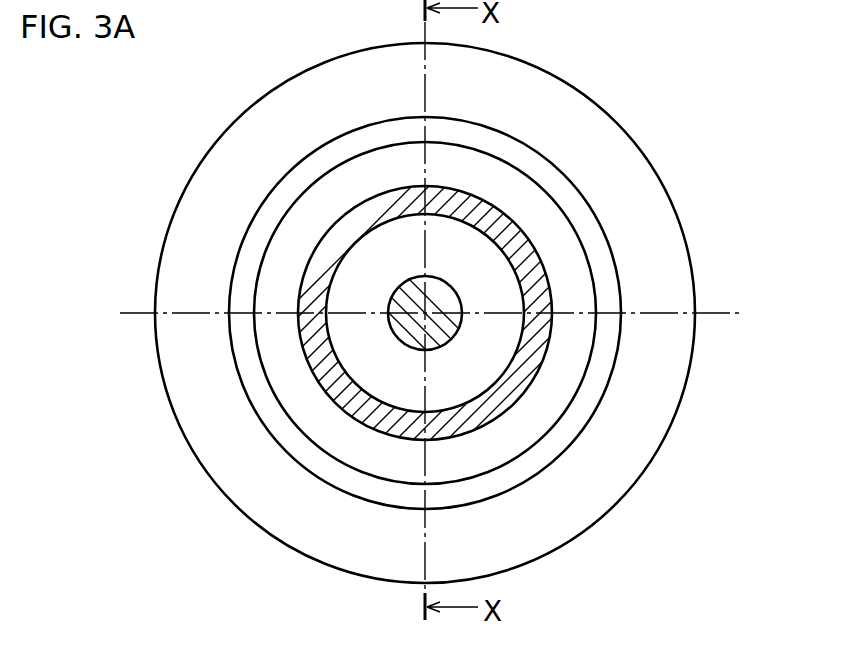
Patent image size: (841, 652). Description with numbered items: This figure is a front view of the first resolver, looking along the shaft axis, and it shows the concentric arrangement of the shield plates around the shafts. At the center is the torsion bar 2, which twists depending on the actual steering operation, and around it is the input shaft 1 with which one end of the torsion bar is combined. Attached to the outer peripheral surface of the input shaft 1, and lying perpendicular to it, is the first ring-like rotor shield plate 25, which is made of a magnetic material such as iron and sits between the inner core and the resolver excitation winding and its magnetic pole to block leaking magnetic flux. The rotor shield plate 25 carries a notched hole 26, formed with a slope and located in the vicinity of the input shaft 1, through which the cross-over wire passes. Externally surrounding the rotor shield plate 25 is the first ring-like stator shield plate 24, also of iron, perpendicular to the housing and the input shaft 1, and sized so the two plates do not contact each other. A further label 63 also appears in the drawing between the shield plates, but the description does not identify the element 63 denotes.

The input shaft 1 is at (545, 282).
The torsion bar 2 is at (447, 332).
The first ring-like stator shield plate 24 is at (640, 437).
The first ring-like rotor shield plate 25 is at (553, 220).
The notched hole 26 is at (459, 269).
The intermediate layer 63 is at (425, 163).